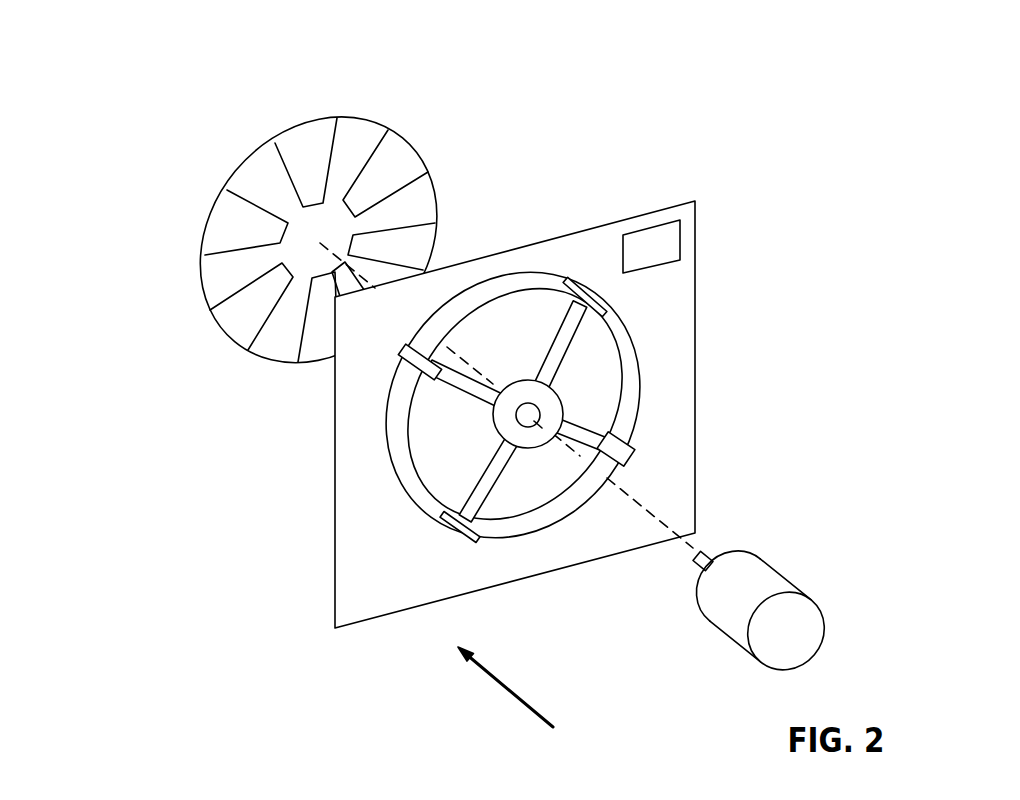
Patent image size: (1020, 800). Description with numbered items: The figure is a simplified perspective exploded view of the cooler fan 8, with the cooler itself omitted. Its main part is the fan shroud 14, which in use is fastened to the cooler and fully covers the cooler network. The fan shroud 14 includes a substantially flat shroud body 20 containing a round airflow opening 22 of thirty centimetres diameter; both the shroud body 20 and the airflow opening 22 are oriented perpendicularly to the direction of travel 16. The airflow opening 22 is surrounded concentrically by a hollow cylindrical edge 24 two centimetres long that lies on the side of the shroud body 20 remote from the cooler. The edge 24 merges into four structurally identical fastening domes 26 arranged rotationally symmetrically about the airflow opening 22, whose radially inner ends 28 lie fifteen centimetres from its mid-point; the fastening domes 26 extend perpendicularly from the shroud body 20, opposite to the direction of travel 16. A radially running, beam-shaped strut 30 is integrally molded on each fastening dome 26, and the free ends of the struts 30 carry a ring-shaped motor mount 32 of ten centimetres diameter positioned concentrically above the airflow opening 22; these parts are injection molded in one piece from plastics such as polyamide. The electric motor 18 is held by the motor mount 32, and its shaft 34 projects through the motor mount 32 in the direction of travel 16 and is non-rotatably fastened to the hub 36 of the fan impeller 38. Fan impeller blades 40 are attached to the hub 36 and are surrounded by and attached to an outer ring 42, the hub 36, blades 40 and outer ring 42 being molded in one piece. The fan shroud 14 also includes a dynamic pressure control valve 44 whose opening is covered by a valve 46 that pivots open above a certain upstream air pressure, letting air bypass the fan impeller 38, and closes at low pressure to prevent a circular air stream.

The cooler fan 8 is at (64, 196).
The fan shroud 14 is at (672, 288).
The direction of travel 16 is at (507, 685).
The electric motor 18 is at (762, 578).
The shroud body 20 is at (373, 518).
The airflow opening 22 is at (542, 436).
The edge 24 is at (625, 393).
The fastening domes 26 is at (405, 345).
The radially inner ends 28 is at (467, 377).
The struts 30 is at (563, 350).
The motor mount 32 is at (532, 446).
The shaft 34 is at (697, 566).
The hub 36 is at (307, 233).
The fan impeller 38 is at (280, 106).
The fan impeller blades 40 is at (364, 133).
The outer ring 42 is at (237, 350).
The dynamic pressure control valve 44 is at (729, 232).
The valve 46 is at (655, 237).